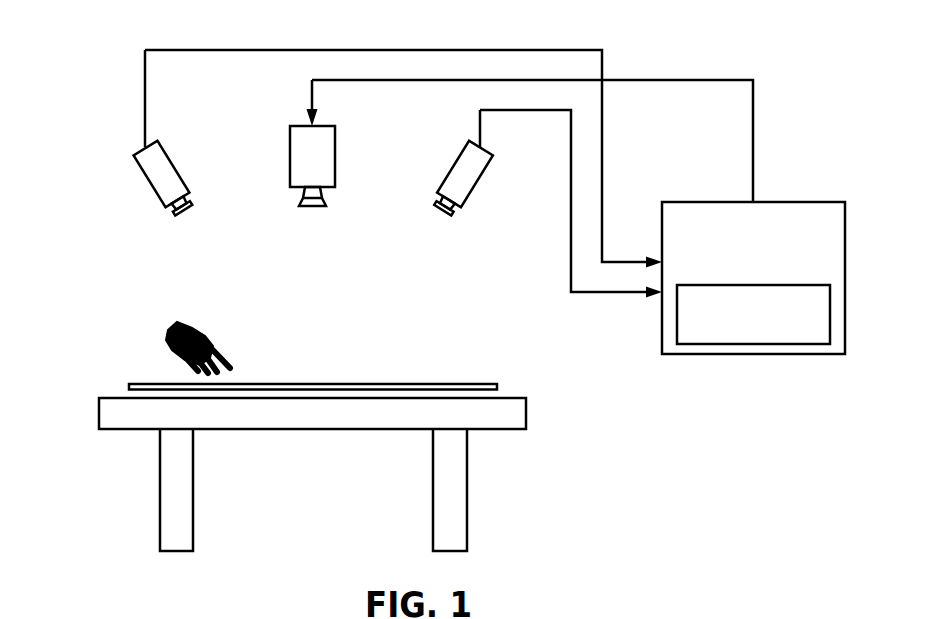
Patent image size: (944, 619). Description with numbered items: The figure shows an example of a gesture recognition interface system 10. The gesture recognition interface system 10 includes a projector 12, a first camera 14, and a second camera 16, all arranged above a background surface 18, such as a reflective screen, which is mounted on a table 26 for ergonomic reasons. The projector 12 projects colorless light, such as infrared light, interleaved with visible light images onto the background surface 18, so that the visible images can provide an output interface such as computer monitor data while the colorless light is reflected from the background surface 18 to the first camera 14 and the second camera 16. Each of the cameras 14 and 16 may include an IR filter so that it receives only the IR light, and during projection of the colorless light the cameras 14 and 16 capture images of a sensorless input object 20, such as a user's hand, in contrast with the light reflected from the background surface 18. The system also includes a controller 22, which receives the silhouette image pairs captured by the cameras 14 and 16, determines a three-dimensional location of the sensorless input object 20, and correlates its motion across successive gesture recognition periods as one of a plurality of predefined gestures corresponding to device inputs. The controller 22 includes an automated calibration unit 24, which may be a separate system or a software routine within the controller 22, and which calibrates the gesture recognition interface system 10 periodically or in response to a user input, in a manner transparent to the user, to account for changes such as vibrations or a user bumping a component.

The gesture recognition interface system 10 is at (77, 19).
The projector 12 is at (335, 126).
The first camera 14 is at (177, 157).
The second camera 16 is at (438, 185).
The background surface 18 is at (465, 384).
The sensorless input object 20 is at (207, 337).
The controller 22 is at (800, 202).
The automated calibration unit 24 is at (753, 344).
The table 26 is at (527, 402).